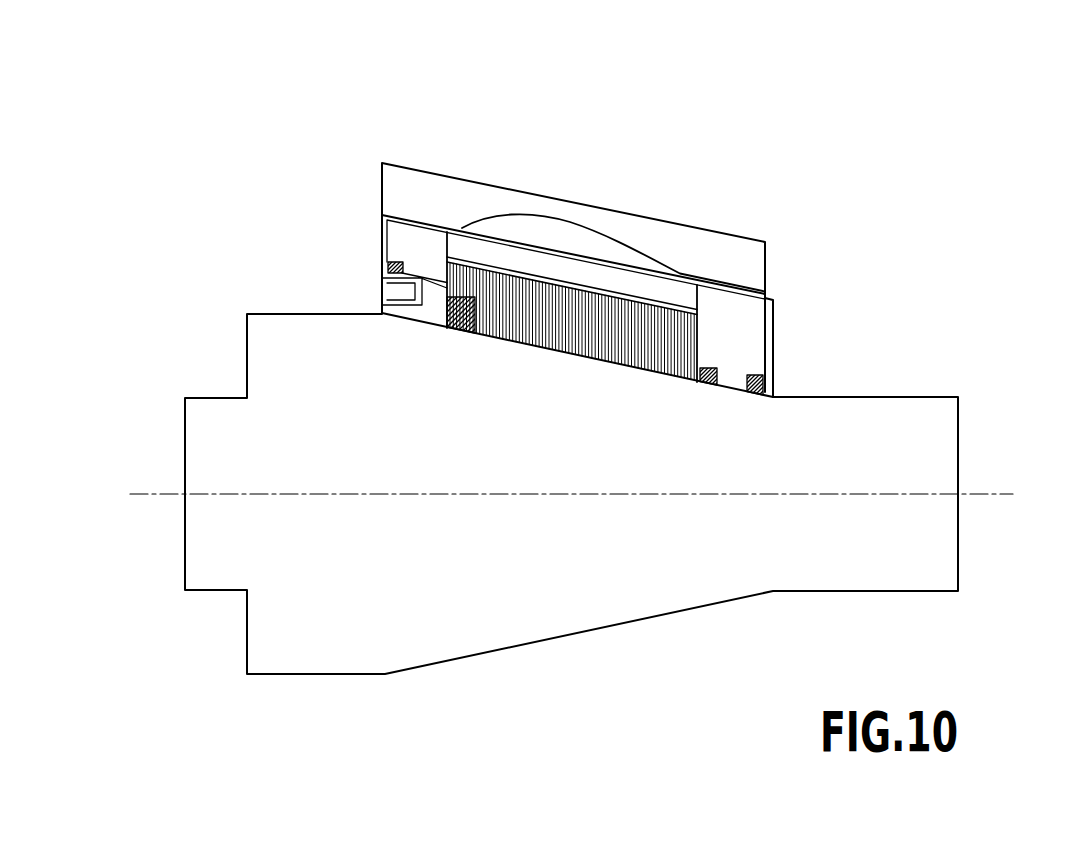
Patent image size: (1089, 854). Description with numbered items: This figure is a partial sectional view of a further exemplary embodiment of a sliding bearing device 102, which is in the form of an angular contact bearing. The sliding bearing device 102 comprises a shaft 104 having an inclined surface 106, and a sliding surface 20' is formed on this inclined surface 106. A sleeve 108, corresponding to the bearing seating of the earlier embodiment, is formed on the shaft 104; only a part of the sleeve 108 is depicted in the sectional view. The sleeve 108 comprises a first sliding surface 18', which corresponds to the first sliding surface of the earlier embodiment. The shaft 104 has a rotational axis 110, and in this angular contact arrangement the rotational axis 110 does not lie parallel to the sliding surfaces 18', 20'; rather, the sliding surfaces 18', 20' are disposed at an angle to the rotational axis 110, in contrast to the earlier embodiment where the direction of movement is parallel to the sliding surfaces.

The sliding bearing device 102 is at (600, 118).
The shaft 104 is at (562, 613).
The inclined surface 106 is at (527, 344).
The sleeve 108 is at (616, 313).
The rotational axis 110 is at (1000, 494).
The sliding surface 20' is at (516, 372).
The first sliding surface 18' is at (613, 338).